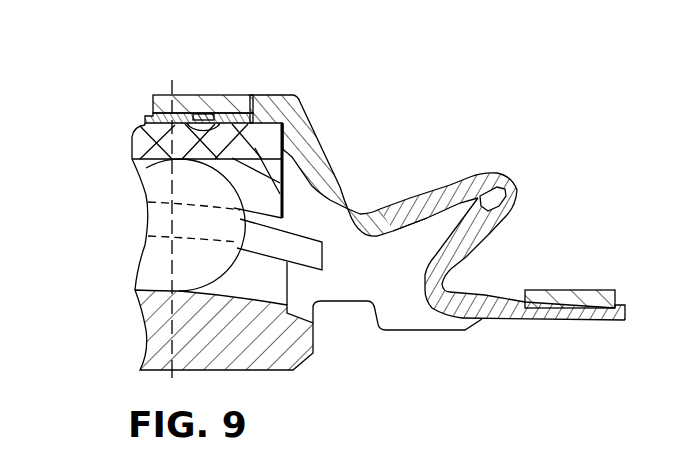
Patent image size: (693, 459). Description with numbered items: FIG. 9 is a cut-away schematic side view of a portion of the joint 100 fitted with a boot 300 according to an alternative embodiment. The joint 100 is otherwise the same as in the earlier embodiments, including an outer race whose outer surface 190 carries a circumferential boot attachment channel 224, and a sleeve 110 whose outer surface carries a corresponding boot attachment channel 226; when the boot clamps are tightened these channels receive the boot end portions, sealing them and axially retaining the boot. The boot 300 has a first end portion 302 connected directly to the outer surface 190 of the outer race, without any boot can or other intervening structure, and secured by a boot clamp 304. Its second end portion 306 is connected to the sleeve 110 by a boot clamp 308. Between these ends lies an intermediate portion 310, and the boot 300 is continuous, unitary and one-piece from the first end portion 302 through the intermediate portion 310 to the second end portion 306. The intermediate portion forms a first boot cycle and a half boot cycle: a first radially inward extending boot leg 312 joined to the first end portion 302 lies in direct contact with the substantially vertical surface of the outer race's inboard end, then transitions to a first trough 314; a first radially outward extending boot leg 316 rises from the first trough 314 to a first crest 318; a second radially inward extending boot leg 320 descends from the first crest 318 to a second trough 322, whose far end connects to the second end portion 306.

The joint 100 is at (323, 392).
The sleeve 110 is at (395, 331).
The outer surface 190 is at (133, 137).
The boot attachment channel 224 is at (147, 168).
The boot attachment channel 226 is at (563, 321).
The boot 300 is at (300, 108).
The first end portion 302 is at (246, 141).
The boot clamp 304 is at (167, 102).
The second end portion 306 is at (537, 330).
The boot clamp 308 is at (593, 302).
The intermediate portion 310 is at (430, 141).
The first radially inward extending boot leg 312 is at (314, 190).
The first trough 314 is at (365, 238).
The first radially outward extending boot leg 316 is at (403, 203).
The first crest 318 is at (507, 178).
The second radially inward extending boot leg 320 is at (500, 234).
The second trough 322 is at (425, 280).